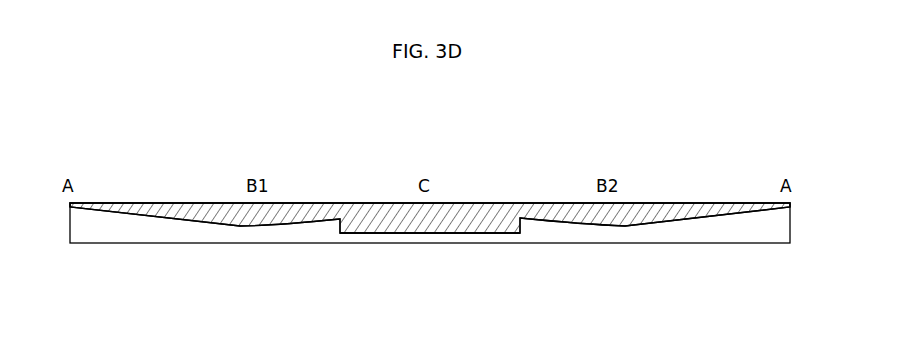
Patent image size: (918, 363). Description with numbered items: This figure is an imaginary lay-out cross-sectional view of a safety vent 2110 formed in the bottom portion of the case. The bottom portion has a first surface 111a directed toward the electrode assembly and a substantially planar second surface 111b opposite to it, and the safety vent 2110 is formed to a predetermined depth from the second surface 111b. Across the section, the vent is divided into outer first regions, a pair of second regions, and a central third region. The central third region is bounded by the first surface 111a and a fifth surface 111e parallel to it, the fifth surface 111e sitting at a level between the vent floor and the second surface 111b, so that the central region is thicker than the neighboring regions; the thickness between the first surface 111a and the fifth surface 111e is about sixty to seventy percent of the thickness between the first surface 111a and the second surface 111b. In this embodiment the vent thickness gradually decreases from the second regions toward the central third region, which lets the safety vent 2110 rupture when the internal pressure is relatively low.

The window member 2110 is at (430, 204).
The first surface 111a is at (700, 203).
The second surface 111b is at (702, 243).
The fifth surface 111e is at (417, 236).